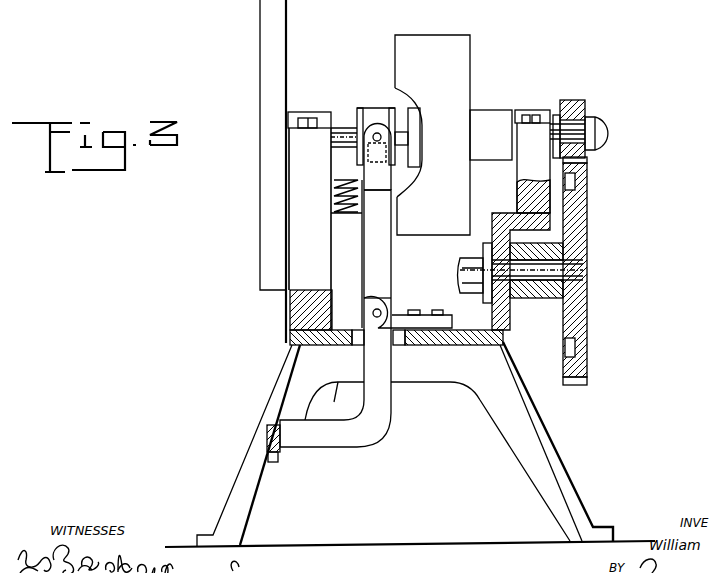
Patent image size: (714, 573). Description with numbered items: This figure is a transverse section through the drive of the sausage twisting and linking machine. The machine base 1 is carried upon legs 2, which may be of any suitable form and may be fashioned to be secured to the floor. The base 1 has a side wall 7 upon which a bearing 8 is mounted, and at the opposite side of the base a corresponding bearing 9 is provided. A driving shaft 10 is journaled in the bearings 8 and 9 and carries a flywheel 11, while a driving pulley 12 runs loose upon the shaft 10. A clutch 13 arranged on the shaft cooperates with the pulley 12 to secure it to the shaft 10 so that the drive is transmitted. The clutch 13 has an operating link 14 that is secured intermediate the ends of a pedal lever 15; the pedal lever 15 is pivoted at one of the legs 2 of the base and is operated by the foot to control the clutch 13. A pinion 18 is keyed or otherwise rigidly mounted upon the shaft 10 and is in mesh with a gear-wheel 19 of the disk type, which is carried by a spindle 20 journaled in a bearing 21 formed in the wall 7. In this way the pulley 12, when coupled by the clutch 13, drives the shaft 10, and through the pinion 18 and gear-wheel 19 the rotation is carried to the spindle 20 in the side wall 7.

The machine base 1 is at (450, 333).
The legs 2 is at (283, 392).
The side wall 7 is at (503, 214).
The bearing 8 is at (534, 147).
The bearing 9 is at (307, 153).
The driving shaft 10 is at (337, 136).
The flywheel 11 is at (268, 42).
The driving pulley 12 is at (450, 47).
The clutch 13 is at (384, 108).
The operating link 14 is at (375, 253).
The pedal lever 15 is at (266, 447).
The pinion 18 is at (586, 113).
The gear-wheel 19 is at (588, 199).
The spindle 20 is at (550, 263).
The bearing 21 is at (543, 291).